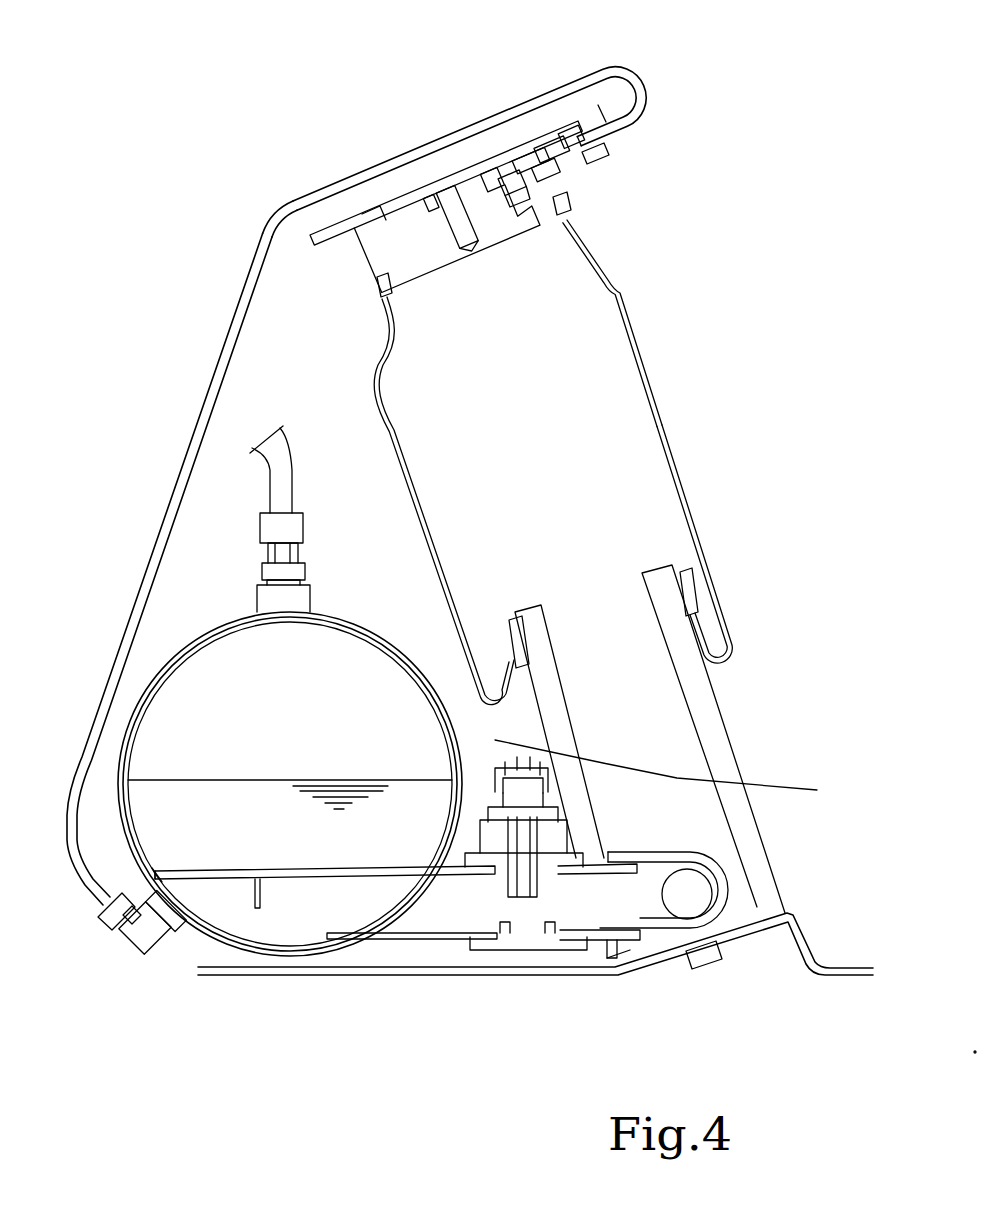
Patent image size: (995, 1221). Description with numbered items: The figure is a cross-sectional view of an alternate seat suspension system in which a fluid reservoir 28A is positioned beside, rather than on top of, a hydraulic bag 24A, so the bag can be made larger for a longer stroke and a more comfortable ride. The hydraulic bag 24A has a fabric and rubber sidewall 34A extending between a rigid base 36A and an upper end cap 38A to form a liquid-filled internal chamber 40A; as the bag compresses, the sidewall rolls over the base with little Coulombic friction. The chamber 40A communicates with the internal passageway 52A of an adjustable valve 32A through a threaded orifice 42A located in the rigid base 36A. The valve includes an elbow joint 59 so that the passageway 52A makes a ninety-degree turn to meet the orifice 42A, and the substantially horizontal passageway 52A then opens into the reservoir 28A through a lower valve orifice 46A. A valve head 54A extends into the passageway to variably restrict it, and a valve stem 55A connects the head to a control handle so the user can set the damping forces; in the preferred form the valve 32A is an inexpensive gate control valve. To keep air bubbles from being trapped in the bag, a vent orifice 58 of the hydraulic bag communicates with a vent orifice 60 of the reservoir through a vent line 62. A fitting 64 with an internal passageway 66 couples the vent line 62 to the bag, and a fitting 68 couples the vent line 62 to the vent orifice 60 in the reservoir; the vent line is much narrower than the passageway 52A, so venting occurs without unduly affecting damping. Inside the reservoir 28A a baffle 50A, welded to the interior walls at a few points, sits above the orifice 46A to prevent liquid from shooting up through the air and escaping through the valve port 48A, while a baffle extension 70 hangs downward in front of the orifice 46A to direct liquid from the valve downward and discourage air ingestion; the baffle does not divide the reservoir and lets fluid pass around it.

The hydraulic bag 24A is at (688, 276).
The fluid reservoir 28A is at (340, 603).
The adjustable valve 32A is at (519, 963).
The sidewall 34A is at (698, 492).
The rigid base 36A is at (753, 862).
The upper end cap 38A is at (328, 230).
The internal chamber 40A is at (620, 378).
The threaded orifice 42A is at (688, 907).
The lower valve orifice 46A is at (370, 917).
The valve port 48A is at (302, 558).
The baffle 50A is at (285, 867).
The internal passageway 52A is at (610, 905).
The valve head 54A is at (508, 887).
The valve stem 55A is at (517, 760).
The vent orifice 58 is at (530, 232).
The elbow joint 59 is at (706, 852).
The vent orifice 60 is at (200, 900).
The vent line 62 is at (155, 549).
The fitting 64 is at (612, 125).
The internal passageway 66 is at (519, 193).
The fitting 68 is at (147, 938).
The baffle extension 70 is at (262, 905).